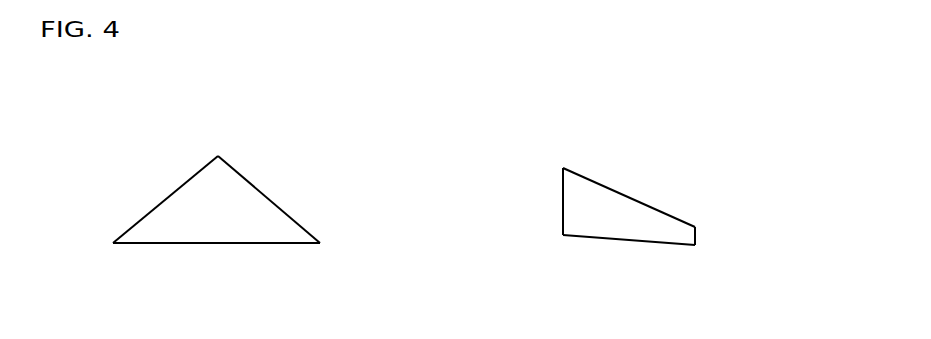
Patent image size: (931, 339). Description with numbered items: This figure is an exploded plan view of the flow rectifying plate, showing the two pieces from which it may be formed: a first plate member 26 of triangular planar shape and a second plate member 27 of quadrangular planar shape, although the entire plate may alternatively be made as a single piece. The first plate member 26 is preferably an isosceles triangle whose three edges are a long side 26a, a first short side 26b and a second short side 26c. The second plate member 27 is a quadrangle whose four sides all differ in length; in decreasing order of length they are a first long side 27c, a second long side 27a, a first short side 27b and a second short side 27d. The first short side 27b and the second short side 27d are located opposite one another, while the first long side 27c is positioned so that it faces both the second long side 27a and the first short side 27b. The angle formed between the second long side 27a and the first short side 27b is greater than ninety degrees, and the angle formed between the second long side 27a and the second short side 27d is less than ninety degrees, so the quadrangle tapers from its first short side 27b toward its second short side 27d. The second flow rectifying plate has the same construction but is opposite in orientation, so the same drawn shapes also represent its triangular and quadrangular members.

The first plate member 26 is at (243, 158).
The long side 26a is at (202, 245).
The first short side 26b is at (172, 193).
The second short side 26c is at (263, 193).
The second plate member 27 is at (627, 179).
The second long side 27a is at (618, 238).
The first short side 27b is at (563, 204).
The first long side 27c is at (647, 203).
The second short side 27d is at (697, 235).